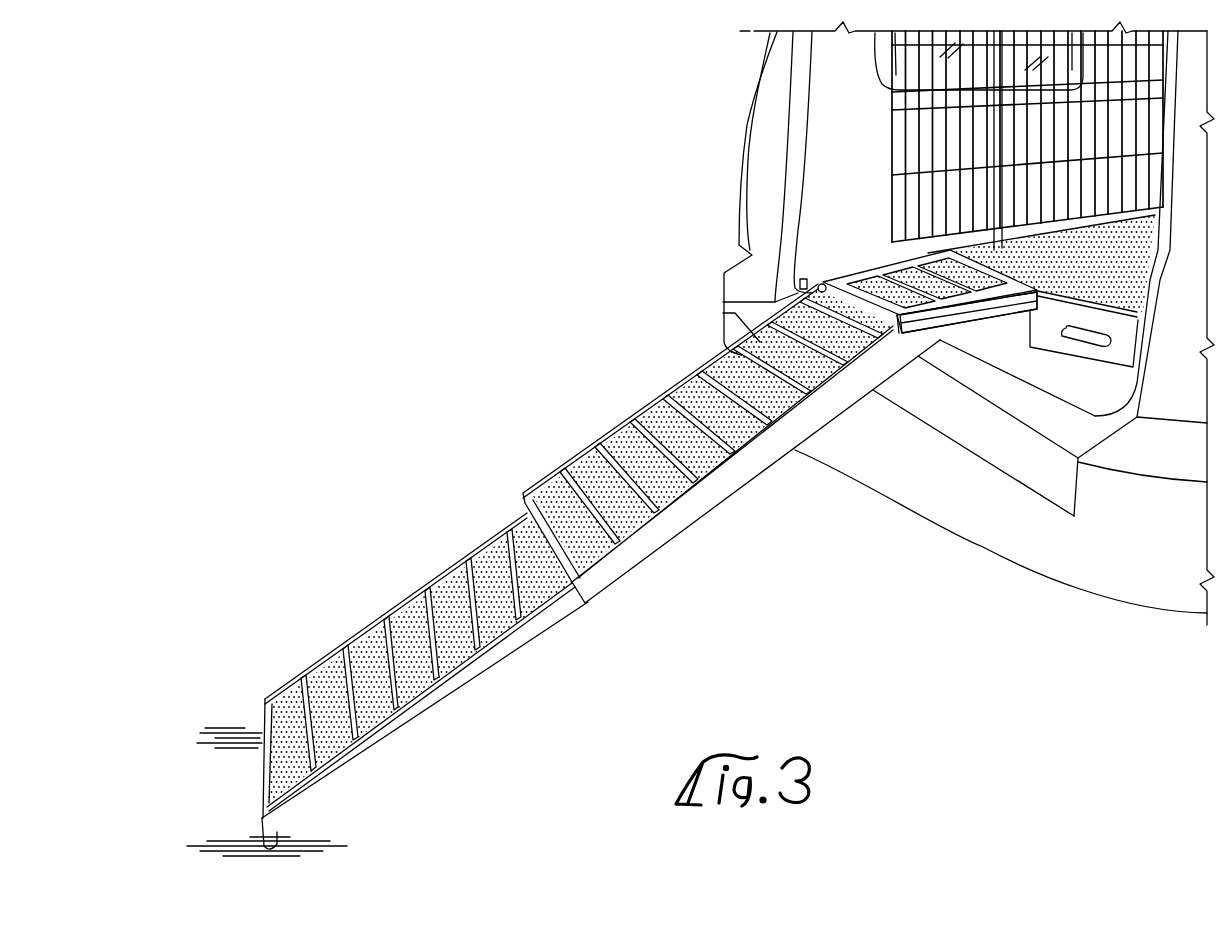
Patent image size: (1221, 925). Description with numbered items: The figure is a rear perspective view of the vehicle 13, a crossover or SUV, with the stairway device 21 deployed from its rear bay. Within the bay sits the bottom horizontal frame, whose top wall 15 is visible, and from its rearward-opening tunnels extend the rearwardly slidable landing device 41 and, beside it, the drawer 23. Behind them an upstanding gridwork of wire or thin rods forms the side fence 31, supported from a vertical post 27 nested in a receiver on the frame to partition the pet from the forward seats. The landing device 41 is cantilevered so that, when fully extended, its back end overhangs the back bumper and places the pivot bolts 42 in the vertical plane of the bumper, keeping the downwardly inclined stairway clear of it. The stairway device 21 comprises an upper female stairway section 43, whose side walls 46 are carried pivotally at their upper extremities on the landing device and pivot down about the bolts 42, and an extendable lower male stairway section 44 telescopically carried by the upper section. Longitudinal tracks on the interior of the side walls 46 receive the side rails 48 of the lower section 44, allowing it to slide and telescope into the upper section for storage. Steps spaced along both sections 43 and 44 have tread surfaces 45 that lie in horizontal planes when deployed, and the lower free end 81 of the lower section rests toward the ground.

The vehicle 13 is at (968, 560).
The top wall 15 is at (1102, 271).
The stairway device 21 is at (615, 531).
The drawer 23 is at (1070, 362).
The vertical post 27 is at (993, 137).
The side fence 31 is at (884, 130).
The landing device 41 is at (860, 270).
The pivot bolt 42 is at (816, 282).
The upper female stairway section 43 is at (731, 443).
The lower male stairway section 44 is at (391, 681).
The tread surface 45 is at (650, 479).
The side wall 46 is at (580, 450).
The side rail 48 is at (400, 602).
The lower free end 81 is at (262, 778).